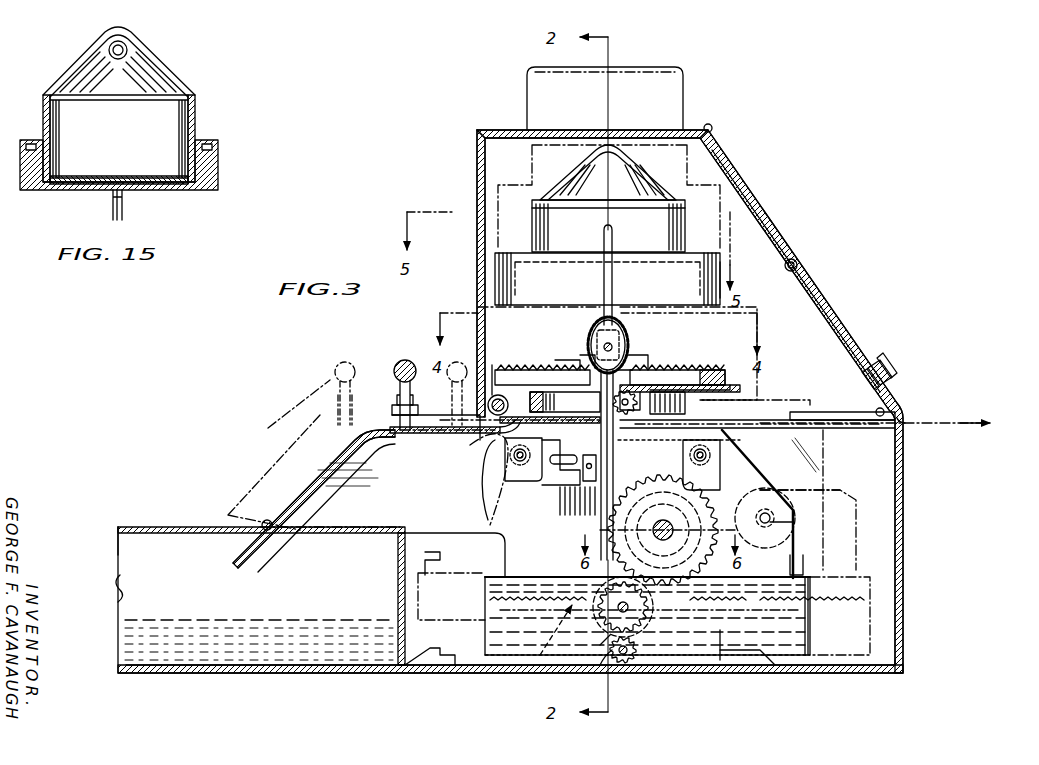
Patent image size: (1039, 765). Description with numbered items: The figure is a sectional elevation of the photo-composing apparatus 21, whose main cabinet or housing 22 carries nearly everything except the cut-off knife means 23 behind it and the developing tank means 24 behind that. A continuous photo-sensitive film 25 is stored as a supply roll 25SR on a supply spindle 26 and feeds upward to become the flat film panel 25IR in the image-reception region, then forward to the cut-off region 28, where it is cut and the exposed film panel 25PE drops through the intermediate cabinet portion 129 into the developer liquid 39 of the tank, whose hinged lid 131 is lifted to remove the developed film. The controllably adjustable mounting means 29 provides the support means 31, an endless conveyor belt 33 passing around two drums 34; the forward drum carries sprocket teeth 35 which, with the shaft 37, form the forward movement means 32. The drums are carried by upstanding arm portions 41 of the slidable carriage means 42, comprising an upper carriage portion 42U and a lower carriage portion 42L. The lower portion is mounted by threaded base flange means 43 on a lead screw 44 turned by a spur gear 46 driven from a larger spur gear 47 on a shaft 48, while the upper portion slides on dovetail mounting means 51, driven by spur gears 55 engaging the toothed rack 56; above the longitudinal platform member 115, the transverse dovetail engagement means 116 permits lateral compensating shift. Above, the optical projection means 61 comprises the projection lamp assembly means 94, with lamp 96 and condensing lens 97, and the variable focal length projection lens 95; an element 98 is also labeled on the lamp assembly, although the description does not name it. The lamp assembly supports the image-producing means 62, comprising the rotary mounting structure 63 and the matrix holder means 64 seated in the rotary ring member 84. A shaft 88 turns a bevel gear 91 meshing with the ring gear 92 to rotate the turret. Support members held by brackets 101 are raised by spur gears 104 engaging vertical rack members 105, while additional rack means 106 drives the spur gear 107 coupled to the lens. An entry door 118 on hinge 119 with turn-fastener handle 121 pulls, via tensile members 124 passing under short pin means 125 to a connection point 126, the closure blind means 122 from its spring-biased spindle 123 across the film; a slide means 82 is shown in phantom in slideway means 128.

In FIG. 3, the photo-composing apparatus 21 is at (946, 656).
In FIG. 3, the main cabinet or housing 22 is at (908, 478).
In FIG. 3, the cut-off knife means 23 is at (400, 360).
In FIG. 3, the developing tank means 24 is at (162, 525).
In FIG. 3, the photo-sensitive film 25 is at (776, 472).
In FIG. 3, the previously exposed film panel 25PE is at (330, 498).
In FIG. 3, the film panel in image-receiving position 25IR is at (705, 401).
In FIG. 3, the film supply roll 25SR is at (796, 508).
In FIG. 3, the supply reel or spindle 26 is at (793, 526).
In FIG. 3, the cut-off region 28 is at (390, 413).
In FIG. 3, the controllably adjustable mounting means 29 is at (488, 635).
In FIG. 3, the upper forwardly moving support means 31 is at (563, 466).
In FIG. 3, the forward movement means 32 is at (470, 455).
In FIG. 3, the endless loop conveyor belt 33 is at (600, 420).
In FIG. 3, the drum portions 34 is at (602, 430).
In FIG. 3, the sprocket teeth 35 is at (512, 458).
In FIG. 3, the shaft 37 is at (512, 462).
In FIG. 3, the developer liquid 39 is at (252, 628).
In FIG. 3, the upstanding arm portions 41 is at (498, 480).
In FIG. 3, the slidable carriage means 42 is at (812, 592).
In FIG. 3, the upper carriage portion 42U is at (647, 556).
In FIG. 3, the lower carriage portion 42L is at (810, 630).
In FIG. 3, the threaded base flange means 43 is at (752, 660).
In FIG. 3, the lead screw 44 is at (608, 662).
In FIG. 3, the spur gear 46 is at (630, 660).
In FIG. 3, the larger spur gear 47 is at (612, 638).
In FIG. 3, the shaft 48 is at (628, 612).
In FIG. 3, the slidable dovetail mounting means 51 is at (455, 576).
In FIG. 3, the spur gears 55 is at (685, 603).
In FIG. 3, the longitudinal toothed rack 56 is at (677, 608).
In FIG. 15, the optical projection means 61 is at (218, 112).
In FIG. 3, the optical projection means 61 is at (722, 238).
In FIG. 3, the image producing means 62 is at (645, 358).
In FIG. 3, the controllably adjustable rotary mounting structure 63 is at (558, 368).
In FIG. 3, the multiple matrix holder means 64 is at (640, 365).
In FIG. 3, the slide means 82 is at (960, 415).
In FIG. 3, the rotary ring member 84 is at (676, 380).
In FIG. 3, the shaft 88 is at (612, 347).
In FIG. 3, the bevel gear 91 is at (585, 355).
In FIG. 3, the ring gear 92 is at (508, 372).
In FIG. 15, the projection lamp assembly means 94 is at (219, 165).
In FIG. 3, the projection lamp assembly means 94 is at (494, 280).
In FIG. 3, the variable focal length projection lens 95 is at (520, 406).
In FIG. 15, the lamp 96 is at (129, 52).
In FIG. 15, the condensing lens 97 is at (170, 192).
In FIG. 3, the drum 98 is at (722, 272).
In FIG. 3, the brackets 101 is at (590, 480).
In FIG. 3, the spur gears 104 is at (614, 480).
In FIG. 3, the vertical rack members 105 is at (628, 492).
In FIG. 3, the additional rack means 106 is at (752, 419).
In FIG. 3, the spur gear 107 is at (670, 388).
In FIG. 3, the longitudinal platform member 115 is at (812, 577).
In FIG. 3, the transverse dovetail engagement means 116 is at (708, 545).
In FIG. 3, the entry door 118 is at (788, 243).
In FIG. 3, the hinge 119 is at (714, 128).
In FIG. 3, the turn-fastener handle means 121 is at (898, 366).
In FIG. 3, the closure blind means 122 is at (492, 370).
In FIG. 3, the spring biased mounting spindle 123 is at (504, 397).
In FIG. 3, the tensile members 124 is at (795, 414).
In FIG. 3, the short pin means 125 is at (876, 410).
In FIG. 3, the connection point 126 is at (798, 266).
In FIG. 3, the slideway means 128 is at (906, 420).
In FIG. 3, the intermediate cabinet portion 129 is at (333, 458).
In FIG. 3, the hinged lid 131 is at (124, 527).